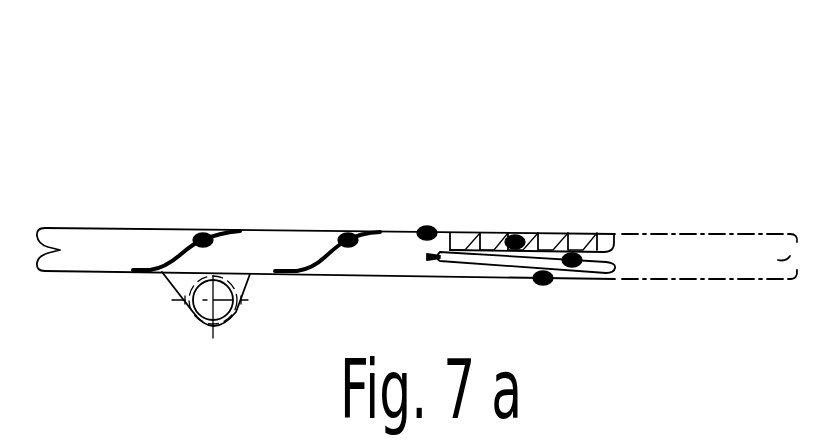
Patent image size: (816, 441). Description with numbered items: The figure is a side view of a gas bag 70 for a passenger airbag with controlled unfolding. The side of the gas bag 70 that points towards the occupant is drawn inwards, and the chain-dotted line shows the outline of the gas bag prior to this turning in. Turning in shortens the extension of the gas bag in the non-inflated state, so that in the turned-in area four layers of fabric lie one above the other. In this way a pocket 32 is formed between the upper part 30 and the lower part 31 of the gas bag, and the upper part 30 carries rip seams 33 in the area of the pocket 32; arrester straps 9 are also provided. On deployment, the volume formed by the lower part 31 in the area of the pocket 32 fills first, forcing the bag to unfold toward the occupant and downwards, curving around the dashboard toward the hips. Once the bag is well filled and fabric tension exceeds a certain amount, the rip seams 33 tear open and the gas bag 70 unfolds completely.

The arrester straps 9 is at (345, 234).
The upper part 30 is at (425, 228).
The lower part 31 is at (548, 282).
The pocket 32 is at (576, 256).
The rip seams 33 is at (518, 236).
The gas bag 70 is at (475, 205).